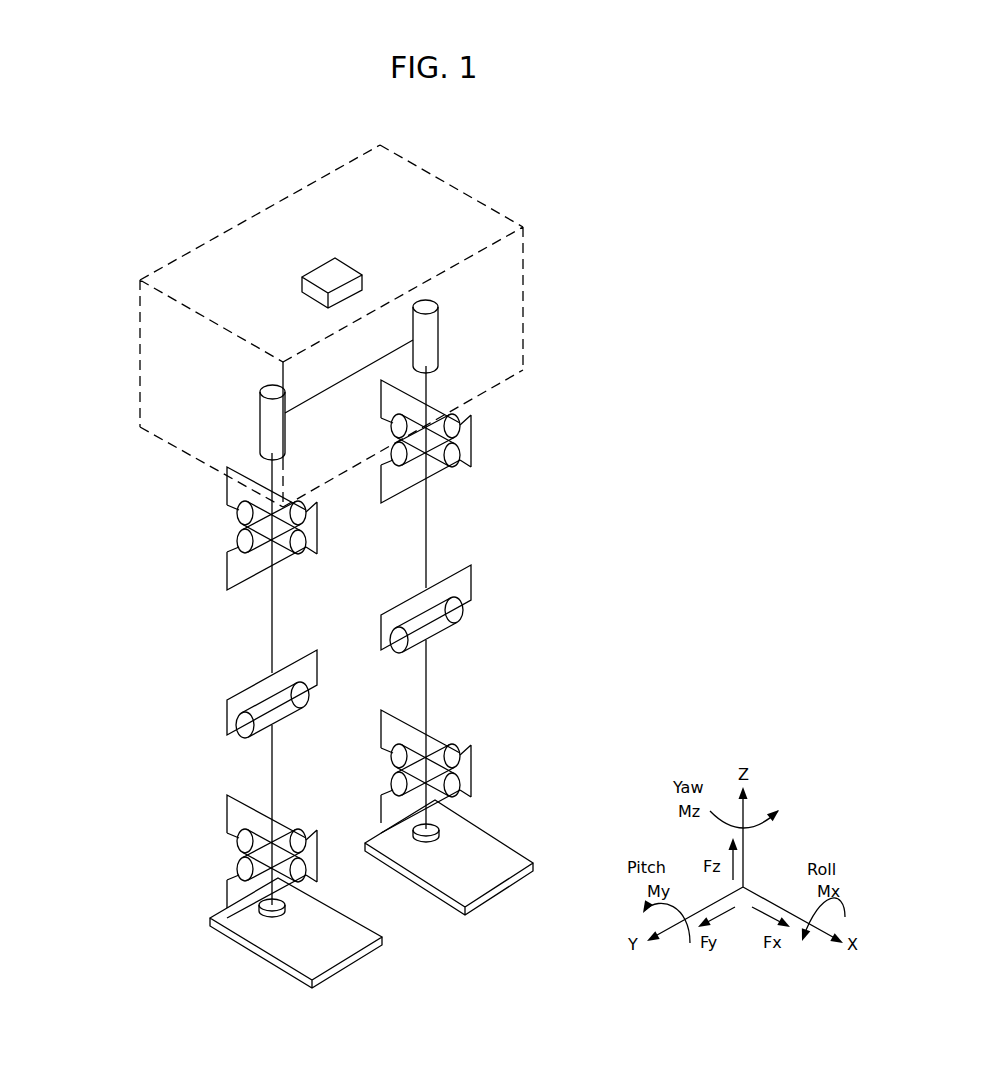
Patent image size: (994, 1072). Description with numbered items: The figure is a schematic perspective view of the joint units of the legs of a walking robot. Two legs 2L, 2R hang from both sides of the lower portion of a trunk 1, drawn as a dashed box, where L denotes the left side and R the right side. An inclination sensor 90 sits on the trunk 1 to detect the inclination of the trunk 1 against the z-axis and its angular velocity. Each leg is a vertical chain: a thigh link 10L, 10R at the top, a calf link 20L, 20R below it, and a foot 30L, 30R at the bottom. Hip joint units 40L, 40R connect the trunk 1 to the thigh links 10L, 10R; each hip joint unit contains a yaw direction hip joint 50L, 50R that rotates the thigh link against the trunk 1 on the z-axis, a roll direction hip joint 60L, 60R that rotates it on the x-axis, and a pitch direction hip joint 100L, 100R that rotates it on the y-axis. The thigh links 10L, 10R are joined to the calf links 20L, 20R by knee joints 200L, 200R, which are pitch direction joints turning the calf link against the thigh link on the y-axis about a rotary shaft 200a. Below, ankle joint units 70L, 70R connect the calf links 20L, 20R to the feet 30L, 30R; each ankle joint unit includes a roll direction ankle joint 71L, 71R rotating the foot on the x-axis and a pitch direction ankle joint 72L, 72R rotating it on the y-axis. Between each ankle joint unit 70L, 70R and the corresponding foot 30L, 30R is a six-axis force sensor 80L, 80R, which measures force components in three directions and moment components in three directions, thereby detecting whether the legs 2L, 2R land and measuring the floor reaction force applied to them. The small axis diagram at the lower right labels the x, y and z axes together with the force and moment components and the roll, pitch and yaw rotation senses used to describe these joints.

The trunk 1 is at (468, 198).
The inclination sensor 90 is at (325, 275).
The right leg 2R is at (213, 697).
The left leg 2L is at (534, 625).
The right hip joint unit 40R is at (187, 500).
The left hip joint unit 40L is at (519, 414).
The right yaw direction hip joint 50R is at (260, 425).
The left yaw direction hip joint 50L is at (418, 337).
The right pitch direction hip joint 100R is at (228, 541).
The left pitch direction hip joint 100L is at (483, 454).
The right roll direction hip joint 60R is at (279, 558).
The left roll direction hip joint 60L is at (431, 471).
The right thigh link 10R is at (272, 627).
The left thigh link 10L is at (428, 545).
The right knee joint 200R is at (211, 692).
The left knee joint 200L is at (495, 607).
The rotary shaft 200a is at (292, 708).
The right calf link 20R is at (272, 757).
The left calf link 20L is at (428, 692).
The right ankle joint unit 70R is at (257, 849).
The left ankle joint unit 70L is at (466, 771).
The right pitch direction ankle joint 72R is at (285, 831).
The left pitch direction ankle joint 72L is at (470, 757).
The right roll direction ankle joint 71R is at (318, 865).
The left roll direction ankle joint 71L is at (399, 770).
The right six-axis force sensor 80R is at (258, 912).
The left six-axis force sensor 80L is at (432, 829).
The right foot 30R is at (285, 963).
The left foot 30L is at (487, 897).